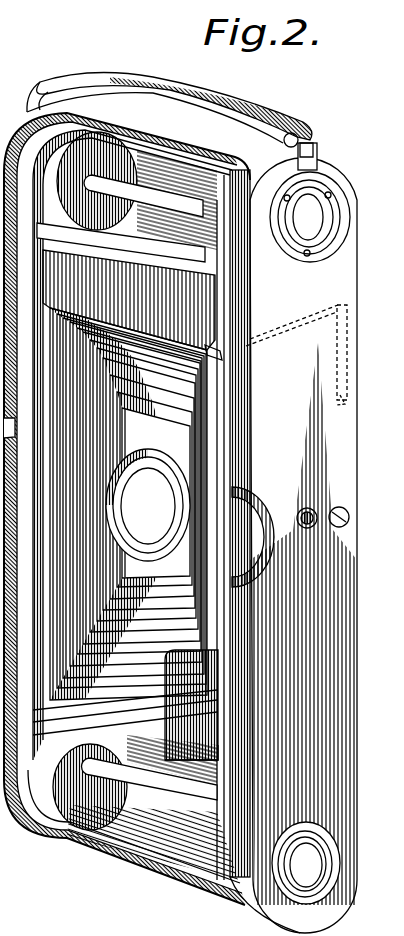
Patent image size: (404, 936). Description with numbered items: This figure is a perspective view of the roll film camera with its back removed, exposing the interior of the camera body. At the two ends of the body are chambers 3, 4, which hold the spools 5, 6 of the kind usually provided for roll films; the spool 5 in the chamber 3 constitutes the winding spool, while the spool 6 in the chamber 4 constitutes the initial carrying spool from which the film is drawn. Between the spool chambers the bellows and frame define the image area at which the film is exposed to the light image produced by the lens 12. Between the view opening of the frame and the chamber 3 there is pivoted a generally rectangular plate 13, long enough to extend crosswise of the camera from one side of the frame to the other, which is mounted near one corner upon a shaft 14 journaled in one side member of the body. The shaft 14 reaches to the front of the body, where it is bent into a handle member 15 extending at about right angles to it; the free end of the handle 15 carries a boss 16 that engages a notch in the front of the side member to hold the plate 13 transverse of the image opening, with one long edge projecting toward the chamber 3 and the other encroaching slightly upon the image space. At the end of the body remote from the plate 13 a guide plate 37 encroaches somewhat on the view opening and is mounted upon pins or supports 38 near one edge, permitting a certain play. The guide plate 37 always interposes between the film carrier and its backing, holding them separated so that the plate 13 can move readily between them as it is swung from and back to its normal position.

The chamber 3 is at (216, 136).
The chamber 4 is at (178, 838).
The winding spool 5 is at (143, 196).
The initial carrying spool 6 is at (150, 780).
The lens 12 is at (148, 505).
The plate 13 is at (170, 312).
The shaft 14 is at (268, 338).
The handle member 15 is at (330, 352).
The boss 16 is at (340, 400).
The guide plate 37 is at (207, 660).
The pins or supports 38 is at (217, 748).